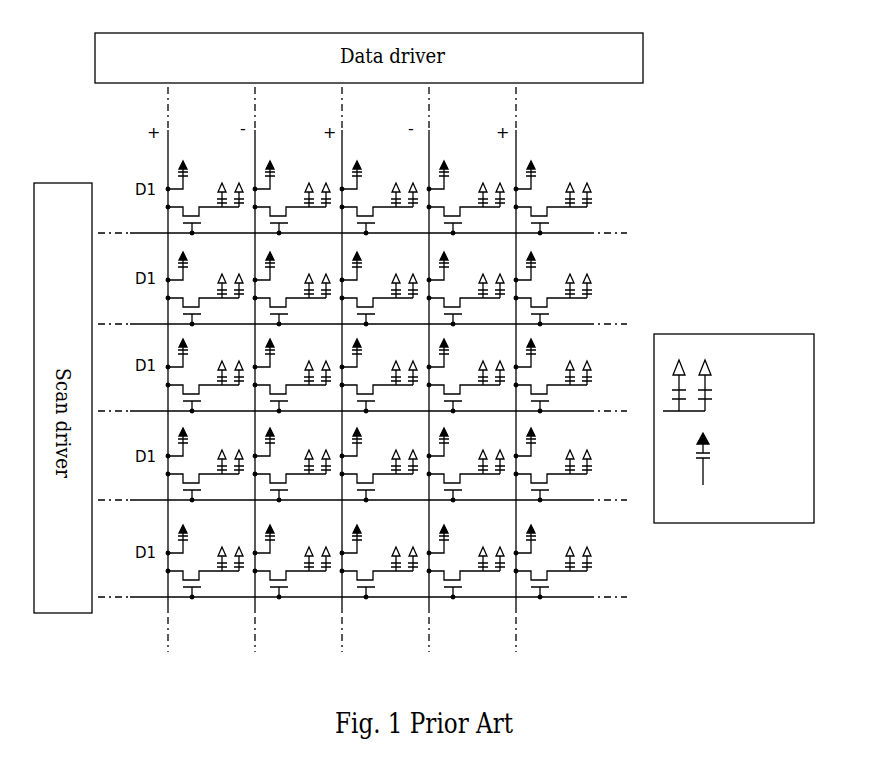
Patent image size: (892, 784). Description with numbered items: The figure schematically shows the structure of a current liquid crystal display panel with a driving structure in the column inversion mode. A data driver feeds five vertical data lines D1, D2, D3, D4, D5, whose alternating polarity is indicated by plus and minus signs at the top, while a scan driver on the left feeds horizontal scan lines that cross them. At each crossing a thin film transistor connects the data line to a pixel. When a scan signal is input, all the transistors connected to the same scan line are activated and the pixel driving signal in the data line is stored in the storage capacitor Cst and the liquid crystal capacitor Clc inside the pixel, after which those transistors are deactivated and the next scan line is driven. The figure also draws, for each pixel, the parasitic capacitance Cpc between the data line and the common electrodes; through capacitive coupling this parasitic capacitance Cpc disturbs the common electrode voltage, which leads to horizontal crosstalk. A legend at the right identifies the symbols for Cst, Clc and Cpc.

The data line D1 is at (205, 369).
The data line D2 is at (292, 369).
The data line D3 is at (379, 369).
The data line D4 is at (466, 369).
The data line D5 is at (553, 369).
The storage capacitor Cst is at (733, 385).
The liquid crystal capacitor Clc is at (705, 385).
The parasitic capacitance Cpc is at (727, 459).